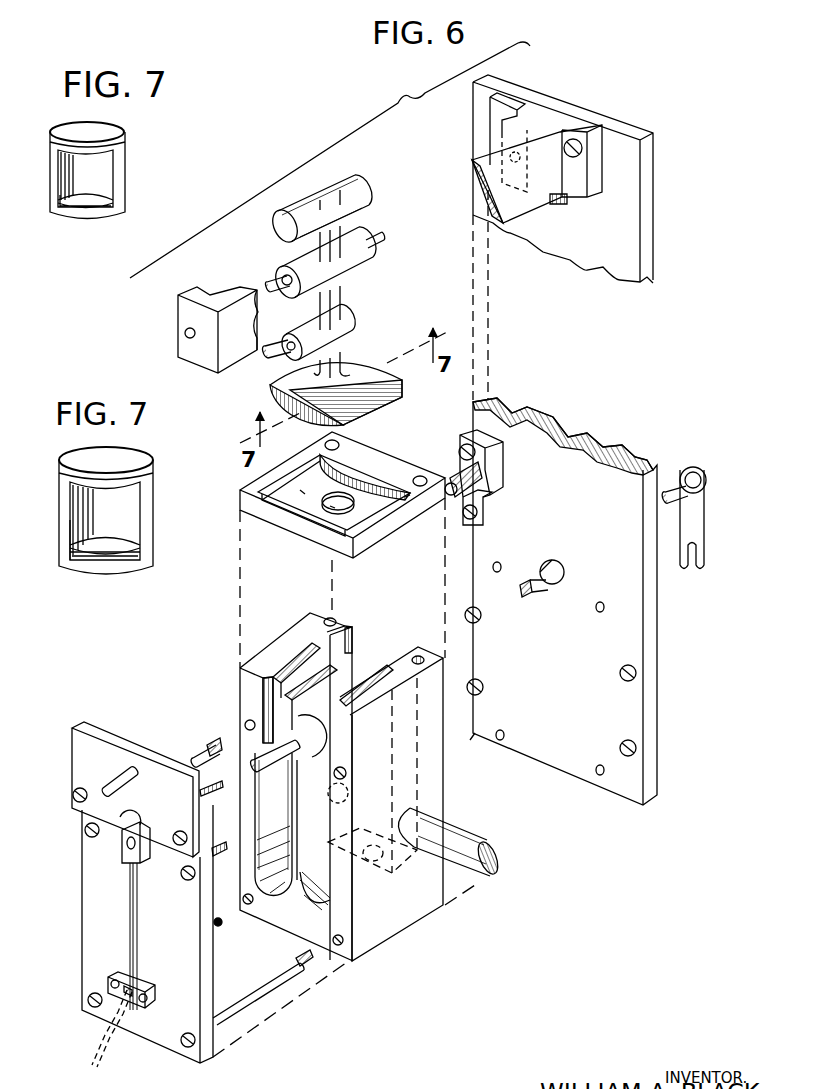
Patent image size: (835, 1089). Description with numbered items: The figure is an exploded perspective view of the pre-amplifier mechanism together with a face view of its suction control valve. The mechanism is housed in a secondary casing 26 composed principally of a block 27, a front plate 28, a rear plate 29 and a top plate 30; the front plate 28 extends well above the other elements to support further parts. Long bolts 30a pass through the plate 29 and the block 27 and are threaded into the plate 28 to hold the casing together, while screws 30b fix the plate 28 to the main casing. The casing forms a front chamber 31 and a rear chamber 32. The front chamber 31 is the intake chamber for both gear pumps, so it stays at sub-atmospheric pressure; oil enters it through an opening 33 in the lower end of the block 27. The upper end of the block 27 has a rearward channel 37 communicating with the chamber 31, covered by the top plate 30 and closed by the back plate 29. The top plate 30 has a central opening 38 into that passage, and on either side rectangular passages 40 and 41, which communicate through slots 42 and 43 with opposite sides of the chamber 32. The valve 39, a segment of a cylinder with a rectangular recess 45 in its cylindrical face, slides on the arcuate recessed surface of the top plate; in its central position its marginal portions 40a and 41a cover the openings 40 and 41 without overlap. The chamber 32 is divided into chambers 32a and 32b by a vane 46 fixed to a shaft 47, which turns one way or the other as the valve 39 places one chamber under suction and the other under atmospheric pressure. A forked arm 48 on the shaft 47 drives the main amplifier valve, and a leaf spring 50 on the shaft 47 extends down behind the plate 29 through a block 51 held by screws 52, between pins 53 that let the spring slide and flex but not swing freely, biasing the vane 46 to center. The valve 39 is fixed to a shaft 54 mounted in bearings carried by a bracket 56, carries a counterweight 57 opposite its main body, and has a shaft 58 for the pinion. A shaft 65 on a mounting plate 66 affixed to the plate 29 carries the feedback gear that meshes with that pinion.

In FIG. 6, the secondary casing 26 is at (222, 630).
In FIG. 6, the block 27 is at (372, 935).
In FIG. 6, the front plate 28 is at (652, 728).
In FIG. 6, the rear plate 29 is at (207, 1037).
In FIG. 6, the top plate 30 is at (390, 460).
In FIG. 6, the long bolts 30a is at (87, 840).
In FIG. 6, the screws 30b is at (478, 622).
In FIG. 6, the front chamber 31 is at (353, 635).
In FIG. 6, the rear chamber 32 is at (283, 798).
In FIG. 6, the chamber 32a is at (263, 887).
In FIG. 6, the chamber 32b is at (318, 873).
In FIG. 6, the opening 33 is at (372, 867).
In FIG. 6, the channel 37 is at (357, 635).
In FIG. 6, the central opening 38 is at (330, 508).
In FIG. 7, the valve 39 is at (112, 128).
In FIG. 6, the valve 39 is at (365, 360).
In FIG. 7, the passage 40 is at (53, 197).
In FIG. 6, the passage 40 is at (303, 490).
In FIG. 7, the marginal portion 40a is at (62, 538).
In FIG. 6, the passage 41 is at (407, 498).
In FIG. 7, the marginal portion 41a is at (116, 190).
In FIG. 6, the slot 42 is at (300, 652).
In FIG. 6, the slot 43 is at (367, 667).
In FIG. 7, the rectangular recess 45 is at (105, 165).
In FIG. 6, the vane 46 is at (320, 873).
In FIG. 6, the shaft 47 is at (530, 580).
In FIG. 6, the forked arm 48 is at (700, 535).
In FIG. 6, the leaf spring 50 is at (137, 953).
In FIG. 6, the block 51 is at (122, 972).
In FIG. 6, the screws 52 is at (110, 982).
In FIG. 6, the pins 53 is at (102, 1039).
In FIG. 6, the shaft 54 is at (382, 235).
In FIG. 6, the bracket 56 is at (510, 103).
In FIG. 6, the counterweight 57 is at (342, 190).
In FIG. 6, the shaft 58 is at (274, 352).
In FIG. 6, the shaft 65 is at (128, 770).
In FIG. 6, the mounting plate 66 is at (97, 730).